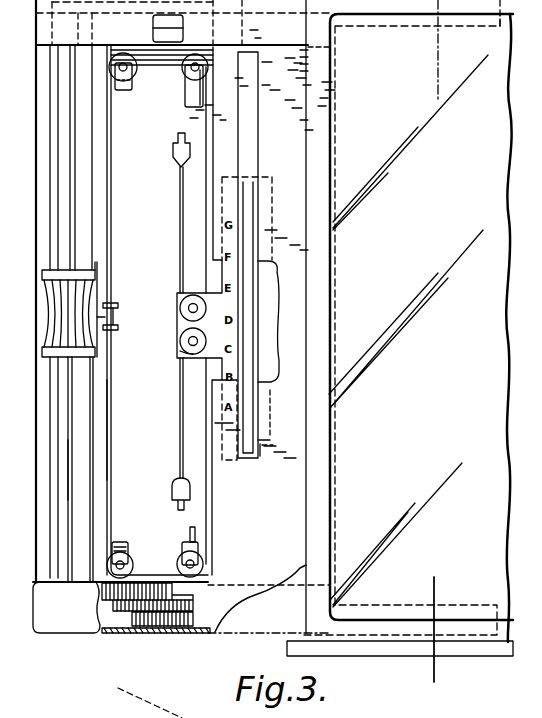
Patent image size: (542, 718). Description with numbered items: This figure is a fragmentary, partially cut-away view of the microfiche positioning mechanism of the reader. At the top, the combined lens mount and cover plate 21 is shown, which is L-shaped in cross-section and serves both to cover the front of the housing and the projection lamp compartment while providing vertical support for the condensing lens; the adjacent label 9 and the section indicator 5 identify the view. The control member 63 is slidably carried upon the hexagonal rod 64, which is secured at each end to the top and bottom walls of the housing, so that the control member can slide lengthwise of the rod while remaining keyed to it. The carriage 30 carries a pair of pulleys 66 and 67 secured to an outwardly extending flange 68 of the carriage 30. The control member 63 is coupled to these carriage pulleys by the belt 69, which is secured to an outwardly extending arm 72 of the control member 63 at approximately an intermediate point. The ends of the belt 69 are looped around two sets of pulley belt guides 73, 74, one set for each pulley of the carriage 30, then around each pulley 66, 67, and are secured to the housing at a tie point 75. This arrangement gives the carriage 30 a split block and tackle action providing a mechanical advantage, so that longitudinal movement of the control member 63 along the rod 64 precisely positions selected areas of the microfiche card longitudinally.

The combined lens mount and cover plate 21 is at (168, 28).
The label box 9 is at (168, 36).
The pulley belt guides 74 is at (133, 76).
The pulley belt guides 73 is at (181, 552).
The control member 63 is at (56, 318).
The outwardly extending arm 72 is at (113, 301).
The pulley 66 is at (180, 306).
The outwardly extending flange 68 is at (179, 323).
The pulley 67 is at (178, 350).
The belt 69 is at (112, 430).
The hexagonal rod 64 is at (66, 477).
The tie point 75 is at (172, 487).
The carriage 30 is at (267, 388).
The section line 5 is at (434, 680).